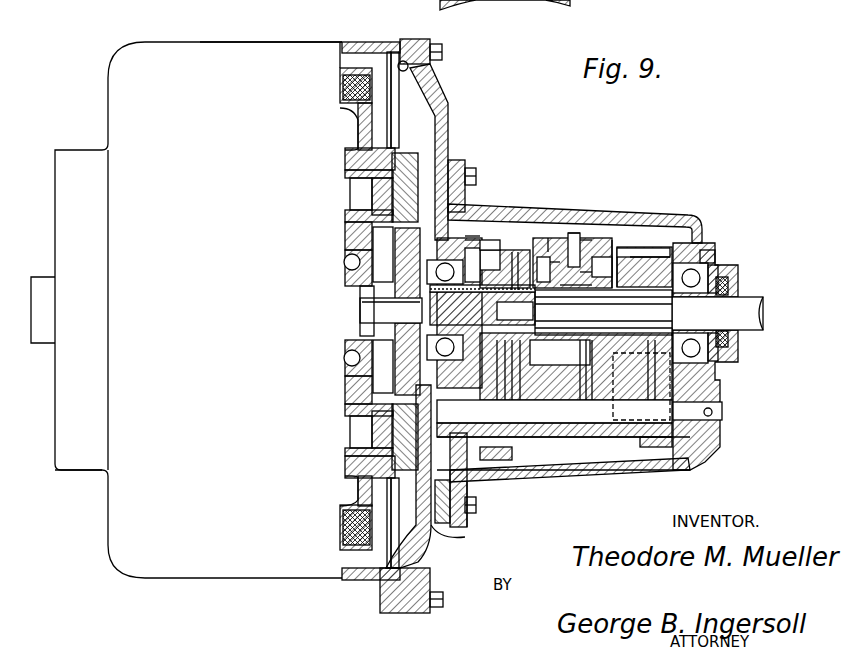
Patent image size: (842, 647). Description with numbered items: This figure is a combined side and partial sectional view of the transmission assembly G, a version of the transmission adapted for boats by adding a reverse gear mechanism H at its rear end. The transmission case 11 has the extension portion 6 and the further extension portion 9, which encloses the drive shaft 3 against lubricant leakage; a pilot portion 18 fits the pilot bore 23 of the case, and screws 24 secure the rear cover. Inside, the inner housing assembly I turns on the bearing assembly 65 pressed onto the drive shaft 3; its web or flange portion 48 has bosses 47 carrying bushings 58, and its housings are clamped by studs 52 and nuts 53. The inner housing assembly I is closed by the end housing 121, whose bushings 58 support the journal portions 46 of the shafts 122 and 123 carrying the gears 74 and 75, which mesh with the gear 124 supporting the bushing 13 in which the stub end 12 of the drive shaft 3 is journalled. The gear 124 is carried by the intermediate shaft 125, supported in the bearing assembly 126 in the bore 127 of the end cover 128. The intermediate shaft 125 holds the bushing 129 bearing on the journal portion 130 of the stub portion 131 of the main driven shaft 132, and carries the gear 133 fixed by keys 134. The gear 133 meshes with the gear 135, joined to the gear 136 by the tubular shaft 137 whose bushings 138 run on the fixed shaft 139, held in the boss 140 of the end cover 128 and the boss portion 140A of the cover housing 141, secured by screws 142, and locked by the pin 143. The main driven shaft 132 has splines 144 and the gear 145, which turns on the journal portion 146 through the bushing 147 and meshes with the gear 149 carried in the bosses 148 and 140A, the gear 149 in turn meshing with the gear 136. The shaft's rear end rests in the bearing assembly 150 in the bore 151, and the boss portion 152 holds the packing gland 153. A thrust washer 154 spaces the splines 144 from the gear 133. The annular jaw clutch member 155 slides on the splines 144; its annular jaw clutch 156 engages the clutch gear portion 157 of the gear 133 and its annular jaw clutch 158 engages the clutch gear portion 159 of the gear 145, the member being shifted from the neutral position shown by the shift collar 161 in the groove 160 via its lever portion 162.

The transmission case 11 is at (118, 52).
The extension portion 9 is at (42, 345).
The extension portion 6 is at (80, 472).
The transmission assembly G is at (270, 42).
The inner housing assembly I is at (350, 70).
The pilot bore 23 is at (398, 47).
The screws 24 is at (442, 52).
The studs 52 is at (350, 90).
The nuts 53 is at (372, 98).
The web or flange portion 48 is at (350, 125).
The bosses 47 is at (372, 160).
The pilot portion 18 is at (375, 103).
The end housing 121 is at (378, 110).
The gear 74 is at (405, 165).
The bushings 58 is at (348, 173).
The journal portions 46 is at (362, 186).
The gear 124 is at (352, 246).
The bearing assembly 65 is at (345, 262).
The drive shaft 3 is at (372, 314).
The bushing 13 is at (360, 303).
The stub or extension portion 12 is at (366, 330).
The gear 75 is at (432, 540).
The shaft 123 is at (445, 530).
The shaft 122 is at (455, 172).
The screws 142 is at (472, 170).
The boss 140 is at (462, 445).
The end cover 128 is at (468, 518).
The boss portion 140A is at (722, 258).
The bearing assembly 150 is at (705, 264).
The bore 151 is at (700, 272).
The packing gland 153 is at (738, 346).
The boss portion 152 is at (736, 360).
The main or driven shaft 132 is at (760, 300).
The pin 143 is at (714, 413).
The bushing 147 is at (674, 292).
The gear 149 is at (674, 328).
The splines 144 is at (605, 304).
The stub or extension portion 131 is at (502, 260).
The intermediate shaft 125 is at (482, 275).
The bearing assembly 126 is at (487, 265).
The bore 127 is at (491, 250).
The thrust washer 154 is at (548, 252).
The lever portion 162 is at (578, 250).
The annular jaw clutch 156 is at (574, 262).
The reverse gear mechanism assembly H is at (588, 264).
The annular jaw clutch member 155 is at (580, 272).
The shift collar 161 is at (576, 286).
The gear 133 is at (512, 262).
The keys 134 is at (517, 276).
The bushing 129 is at (547, 256).
The journal portion 130 is at (553, 268).
The clutch gear portion 159 is at (627, 236).
The journal portion 146 is at (632, 274).
The cover housing 141 is at (641, 280).
The gear 145 is at (660, 266).
The boss 148 is at (563, 401).
The groove 160 is at (542, 432).
The gear 135 is at (500, 448).
The bushings 138 is at (506, 428).
The clutch gear portion 157 is at (514, 420).
The fixed shaft 139 is at (592, 420).
The tubular shaft 137 is at (586, 392).
The annular jaw clutch 158 is at (582, 372).
The gear 136 is at (650, 440).